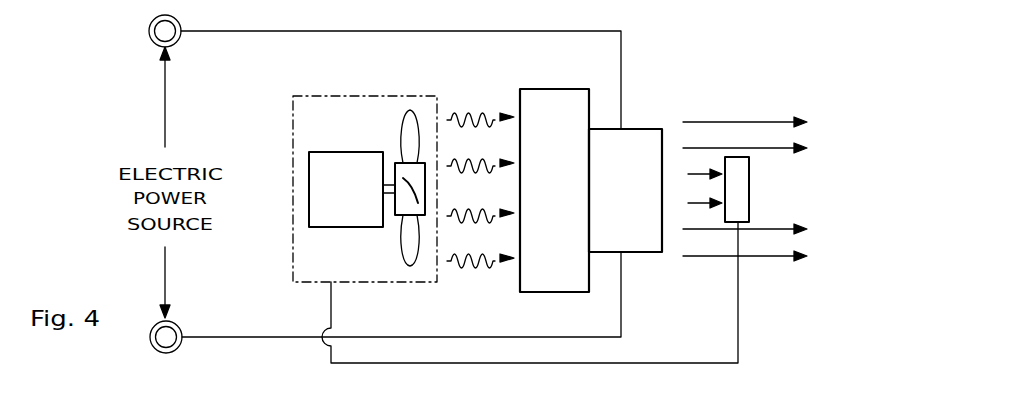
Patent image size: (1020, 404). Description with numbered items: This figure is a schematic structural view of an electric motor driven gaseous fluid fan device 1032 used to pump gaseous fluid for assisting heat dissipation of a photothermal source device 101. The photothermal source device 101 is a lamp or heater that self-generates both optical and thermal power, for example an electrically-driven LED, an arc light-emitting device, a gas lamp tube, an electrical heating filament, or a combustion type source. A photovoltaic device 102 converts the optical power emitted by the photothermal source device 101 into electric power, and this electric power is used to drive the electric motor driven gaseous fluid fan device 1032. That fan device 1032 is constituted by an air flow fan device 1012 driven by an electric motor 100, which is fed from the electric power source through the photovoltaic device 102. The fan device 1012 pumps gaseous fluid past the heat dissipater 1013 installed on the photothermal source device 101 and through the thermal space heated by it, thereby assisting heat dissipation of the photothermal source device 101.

The electric motor driven gaseous fluid fan device 1032 is at (319, 96).
The electric motor 100 is at (346, 189).
The air flow fan device 1012 is at (412, 123).
The heat dissipater 1013 is at (567, 89).
The photothermal source device 101 is at (631, 145).
The photovoltaic device 102 is at (750, 199).